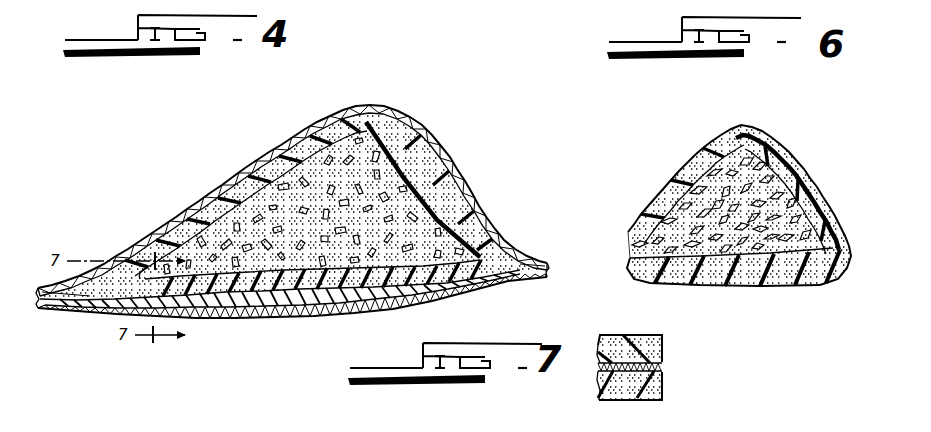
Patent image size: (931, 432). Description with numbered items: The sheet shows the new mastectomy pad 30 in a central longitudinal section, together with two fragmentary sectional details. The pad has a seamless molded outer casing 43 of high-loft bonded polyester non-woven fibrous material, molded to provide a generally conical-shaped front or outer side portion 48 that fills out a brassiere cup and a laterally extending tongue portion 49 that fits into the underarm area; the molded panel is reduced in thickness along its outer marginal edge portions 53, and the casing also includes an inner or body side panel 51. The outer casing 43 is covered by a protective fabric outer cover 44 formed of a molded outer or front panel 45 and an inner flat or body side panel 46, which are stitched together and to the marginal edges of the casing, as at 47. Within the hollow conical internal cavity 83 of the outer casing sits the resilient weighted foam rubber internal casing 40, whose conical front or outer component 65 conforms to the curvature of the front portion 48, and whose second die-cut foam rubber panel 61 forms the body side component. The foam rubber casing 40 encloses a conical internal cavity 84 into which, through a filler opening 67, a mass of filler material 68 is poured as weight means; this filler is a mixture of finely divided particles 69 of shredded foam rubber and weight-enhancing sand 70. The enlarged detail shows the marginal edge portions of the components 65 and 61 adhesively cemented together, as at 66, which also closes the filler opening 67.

In FIG. 4, the mastectomy pad 30 is at (338, 107).
In FIG. 4, the resilient weighted closed foam rubber internal casing 40 is at (462, 211).
In FIG. 6, the resilient weighted closed foam rubber internal casing 40 is at (819, 182).
In FIG. 4, the seamless molded outer casing 43 is at (429, 129).
In FIG. 4, the protective fabric outer cover 44 is at (378, 101).
In FIG. 4, the molded outer or front panel 45 is at (272, 145).
In FIG. 4, the inner flat or body side panel 46 is at (277, 320).
In FIG. 4, the stitching 47 is at (55, 310).
In FIG. 4, the generally conical-shaped front or outer side portion 48 is at (420, 125).
In FIG. 4, the laterally extending tongue portion 49 is at (117, 257).
In FIG. 4, the inner or body side panel 51 is at (383, 313).
In FIG. 4, the reduced-thickness outer marginal edge portions 53 is at (77, 302).
In FIG. 4, the second die-cut foam rubber panel 61 is at (332, 313).
In FIG. 6, the second die-cut foam rubber panel 61 is at (767, 287).
In FIG. 7, the second die-cut foam rubber panel 61 is at (662, 398).
In FIG. 4, the front or outer foam rubber component 65 is at (317, 122).
In FIG. 6, the front or outer foam rubber component 65 is at (770, 143).
In FIG. 7, the front or outer foam rubber component 65 is at (647, 345).
In FIG. 7, the cemented marginal edge portions 66 is at (663, 368).
In FIG. 6, the filler opening 67 is at (634, 242).
In FIG. 4, the filler material 68 is at (419, 204).
In FIG. 6, the filler material 68 is at (781, 186).
In FIG. 4, the particles of shredded foam rubber 69 is at (482, 238).
In FIG. 6, the particles of shredded foam rubber 69 is at (845, 225).
In FIG. 4, the sand 70 is at (428, 311).
In FIG. 6, the sand 70 is at (797, 283).
In FIG. 4, the internal cavity of outer casing 83 is at (222, 170).
In FIG. 4, the internal cavity of foam rubber casing 84 is at (402, 176).
In FIG. 6, the internal cavity of foam rubber casing 84 is at (730, 146).